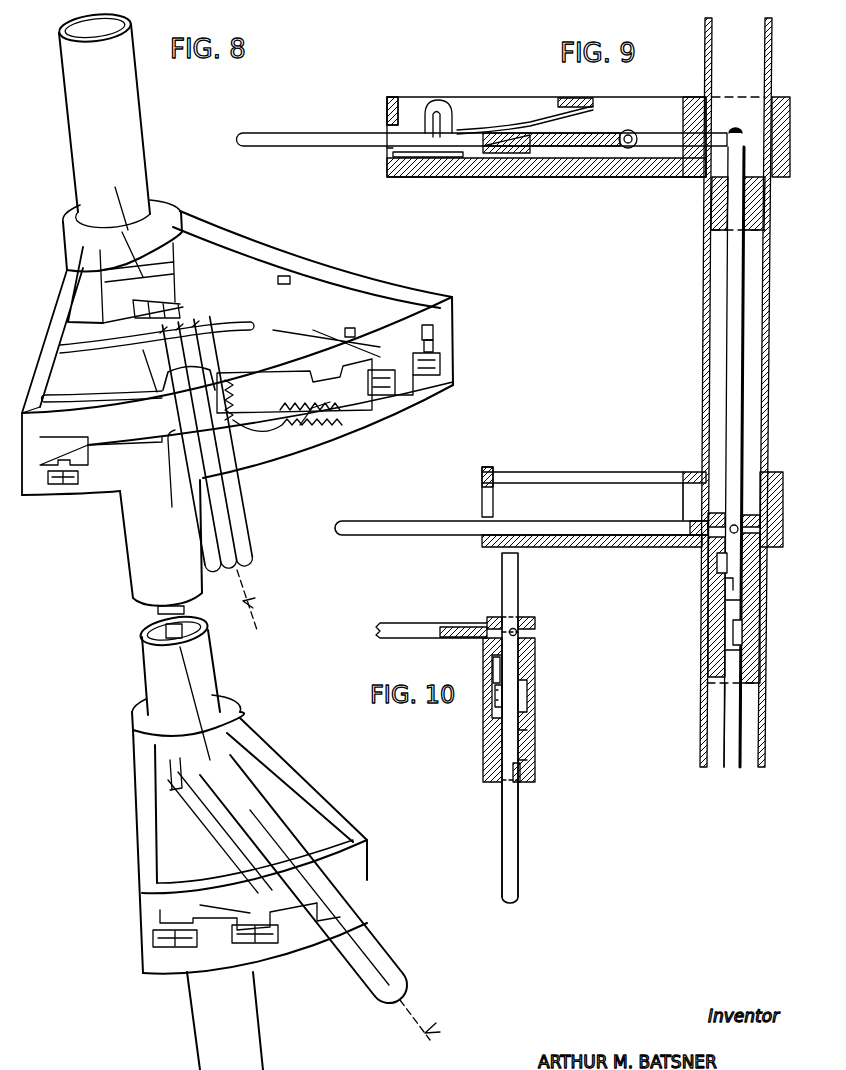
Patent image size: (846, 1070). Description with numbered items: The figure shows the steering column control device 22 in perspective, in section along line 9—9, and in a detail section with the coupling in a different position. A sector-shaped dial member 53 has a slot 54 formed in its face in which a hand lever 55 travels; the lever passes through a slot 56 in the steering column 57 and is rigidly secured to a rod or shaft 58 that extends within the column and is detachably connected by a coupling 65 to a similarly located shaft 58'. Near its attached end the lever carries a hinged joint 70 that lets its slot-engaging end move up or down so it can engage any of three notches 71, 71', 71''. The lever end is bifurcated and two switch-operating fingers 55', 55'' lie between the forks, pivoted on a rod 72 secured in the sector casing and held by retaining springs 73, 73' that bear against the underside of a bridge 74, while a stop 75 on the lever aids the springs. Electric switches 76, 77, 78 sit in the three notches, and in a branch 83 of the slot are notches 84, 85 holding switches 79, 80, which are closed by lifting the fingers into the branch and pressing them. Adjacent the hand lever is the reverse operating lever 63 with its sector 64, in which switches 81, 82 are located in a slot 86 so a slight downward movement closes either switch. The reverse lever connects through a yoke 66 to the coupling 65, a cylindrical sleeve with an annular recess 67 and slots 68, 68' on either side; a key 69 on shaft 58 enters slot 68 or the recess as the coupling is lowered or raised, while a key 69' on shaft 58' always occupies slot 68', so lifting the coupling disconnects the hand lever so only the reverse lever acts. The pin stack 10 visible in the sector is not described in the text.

In FIG. 8, the section line 9— 9 is at (428, 1030).
In FIG. 8, the pin slider stack 10 is at (182, 305).
In FIG. 8, the control device 22 is at (380, 270).
In FIG. 9, the control device 22 is at (657, 182).
In FIG. 8, the sector-shaped dial member 53 is at (410, 395).
In FIG. 8, the slot 54 is at (133, 493).
In FIG. 9, the slot 54 is at (388, 128).
In FIG. 8, the hand lever 55 is at (229, 444).
In FIG. 9, the hand lever 55 is at (482, 170).
In FIG. 8, the switch-operating finger 55' is at (184, 464).
In FIG. 9, the switch-operating finger 55' is at (309, 107).
In FIG. 8, the switch-operating finger 55'' is at (230, 409).
In FIG. 8, the slot in steering column 56 is at (64, 222).
In FIG. 9, the slot in steering column 56 is at (720, 140).
In FIG. 8, the steering column 57 is at (130, 150).
In FIG. 9, the steering column 57 is at (768, 263).
In FIG. 8, the rod or shaft 58 is at (200, 835).
In FIG. 9, the rod or shaft 58 is at (695, 457).
In FIG. 10, the rod or shaft 58 is at (533, 728).
In FIG. 9, the shaft 58' is at (689, 725).
In FIG. 10, the shaft 58' is at (536, 839).
In FIG. 8, the reverse operating lever 63 is at (372, 945).
In FIG. 9, the reverse operating lever 63 is at (435, 535).
In FIG. 10, the reverse operating lever 63 is at (431, 630).
In FIG. 8, the reverse sector 64 is at (368, 862).
In FIG. 9, the reverse sector 64 is at (483, 475).
In FIG. 8, the coupling 65 is at (173, 773).
In FIG. 9, the coupling 65 is at (737, 580).
In FIG. 10, the coupling 65 is at (535, 692).
In FIG. 9, the yoke 66 is at (784, 523).
In FIG. 10, the yoke 66 is at (540, 630).
In FIG. 9, the annular recess 67 is at (745, 605).
In FIG. 10, the annular recess 67 is at (527, 710).
In FIG. 9, the slot 68 is at (688, 569).
In FIG. 10, the slot 68 is at (470, 665).
In FIG. 9, the slot 68' is at (768, 634).
In FIG. 10, the slot 68' is at (552, 745).
In FIG. 9, the key 69 is at (693, 597).
In FIG. 10, the key 69 is at (471, 715).
In FIG. 9, the key 69' is at (769, 629).
In FIG. 10, the key 69' is at (551, 775).
In FIG. 9, the hinged joint 70 is at (632, 131).
In FIG. 8, the notch 71 is at (94, 487).
In FIG. 8, the notch 71' is at (169, 477).
In FIG. 9, the notch 71' is at (371, 161).
In FIG. 8, the notch 71'' is at (337, 433).
In FIG. 8, the rod 72 is at (350, 328).
In FIG. 9, the rod 72 is at (437, 112).
In FIG. 8, the retaining spring 73 is at (102, 376).
In FIG. 9, the retaining spring 73 is at (525, 97).
In FIG. 8, the retaining spring 73' is at (157, 342).
In FIG. 8, the bridge 74 is at (284, 276).
In FIG. 9, the bridge 74 is at (573, 100).
In FIG. 9, the stop 75 is at (497, 154).
In FIG. 8, the electric switch 76 is at (65, 487).
In FIG. 9, the electric switch 77 is at (417, 158).
In FIG. 8, the electric switch 78 is at (328, 433).
In FIG. 8, the switch 79 is at (395, 380).
In FIG. 8, the switch 80 is at (440, 372).
In FIG. 8, the switch 81 is at (167, 947).
In FIG. 8, the switch 82 is at (267, 943).
In FIG. 8, the branch of the slot 83 is at (433, 335).
In FIG. 8, the notch 84 is at (382, 395).
In FIG. 8, the notch 85 is at (433, 333).
In FIG. 8, the slot 86 is at (253, 913).
In FIG. 9, the slot 86 is at (493, 490).